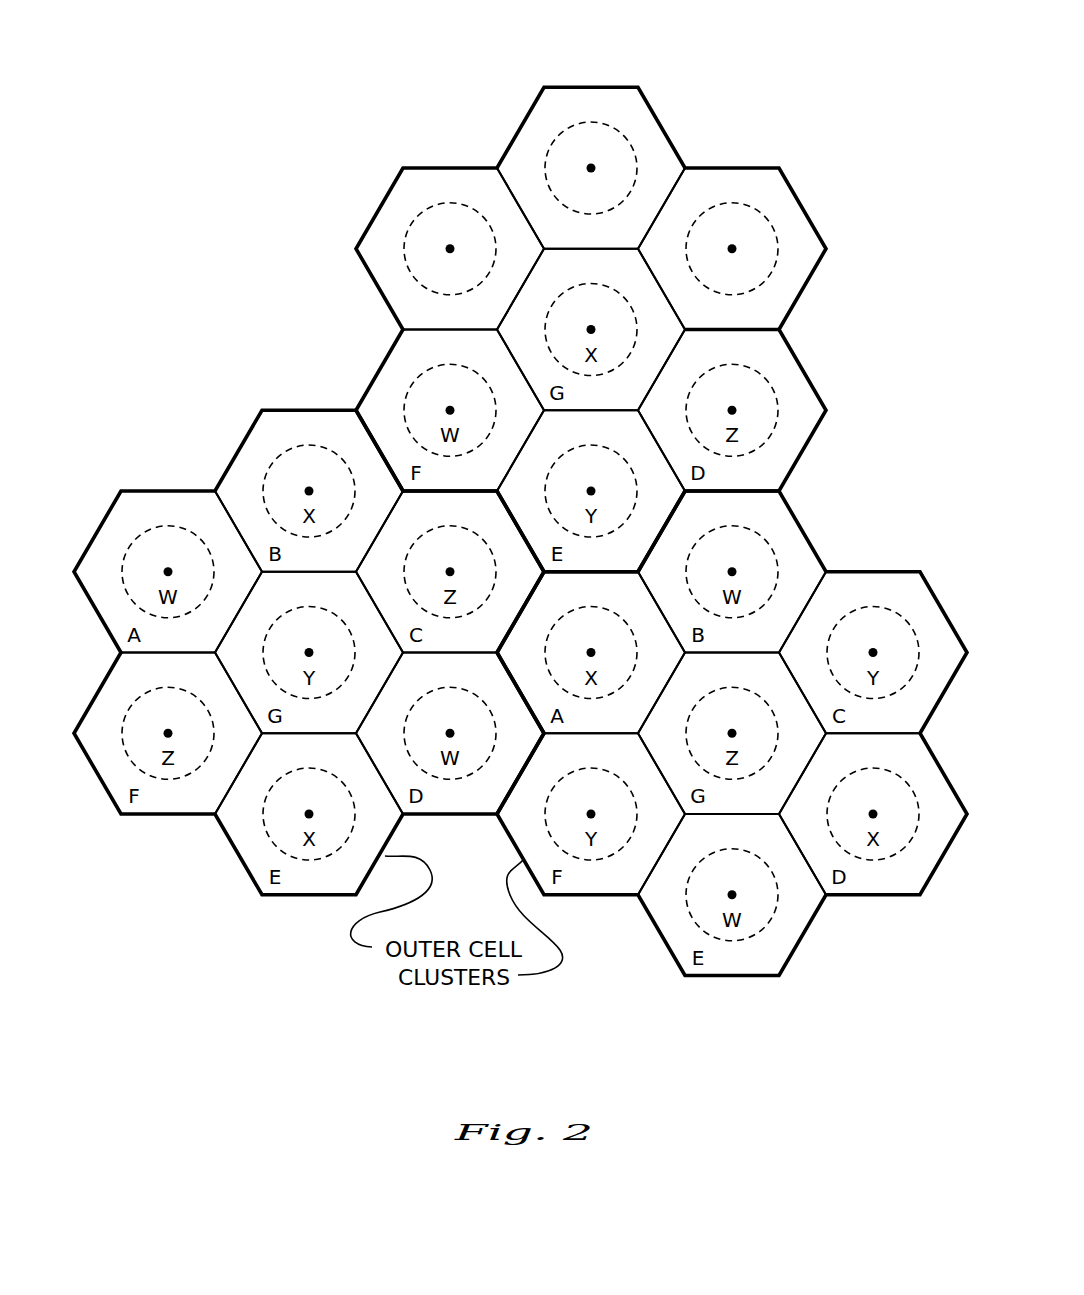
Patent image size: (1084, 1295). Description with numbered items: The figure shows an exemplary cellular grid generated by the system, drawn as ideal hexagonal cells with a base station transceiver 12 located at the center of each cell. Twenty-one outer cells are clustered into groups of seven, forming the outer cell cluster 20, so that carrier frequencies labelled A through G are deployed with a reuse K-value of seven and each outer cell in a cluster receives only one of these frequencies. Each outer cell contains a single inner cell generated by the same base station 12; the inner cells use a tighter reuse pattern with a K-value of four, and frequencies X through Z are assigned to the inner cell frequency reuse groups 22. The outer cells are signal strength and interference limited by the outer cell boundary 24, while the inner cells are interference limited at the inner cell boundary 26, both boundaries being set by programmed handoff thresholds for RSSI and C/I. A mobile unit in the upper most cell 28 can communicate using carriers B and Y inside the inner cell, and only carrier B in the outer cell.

The upper most cell 28 is at (592, 87).
The inner cell boundary 26 is at (410, 221).
The base station transceiver 12 is at (735, 246).
The inner cell frequency reuse group 22 is at (746, 275).
The outer cell boundary 24 is at (732, 331).
The cell cluster 20 is at (400, 327).